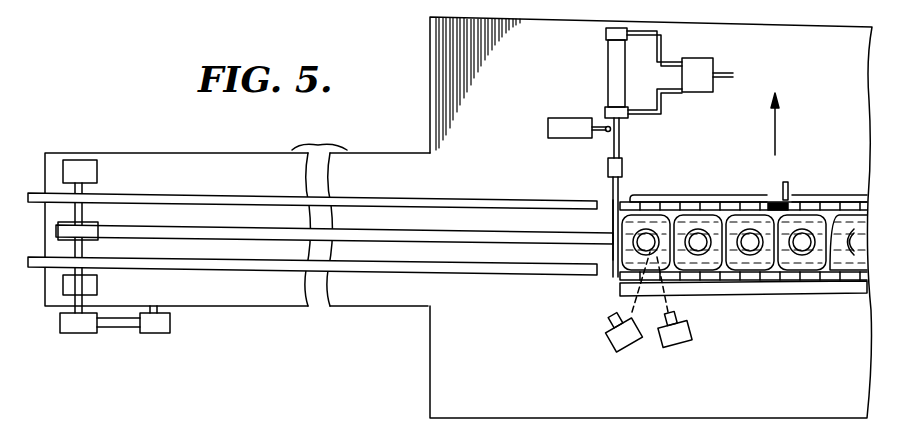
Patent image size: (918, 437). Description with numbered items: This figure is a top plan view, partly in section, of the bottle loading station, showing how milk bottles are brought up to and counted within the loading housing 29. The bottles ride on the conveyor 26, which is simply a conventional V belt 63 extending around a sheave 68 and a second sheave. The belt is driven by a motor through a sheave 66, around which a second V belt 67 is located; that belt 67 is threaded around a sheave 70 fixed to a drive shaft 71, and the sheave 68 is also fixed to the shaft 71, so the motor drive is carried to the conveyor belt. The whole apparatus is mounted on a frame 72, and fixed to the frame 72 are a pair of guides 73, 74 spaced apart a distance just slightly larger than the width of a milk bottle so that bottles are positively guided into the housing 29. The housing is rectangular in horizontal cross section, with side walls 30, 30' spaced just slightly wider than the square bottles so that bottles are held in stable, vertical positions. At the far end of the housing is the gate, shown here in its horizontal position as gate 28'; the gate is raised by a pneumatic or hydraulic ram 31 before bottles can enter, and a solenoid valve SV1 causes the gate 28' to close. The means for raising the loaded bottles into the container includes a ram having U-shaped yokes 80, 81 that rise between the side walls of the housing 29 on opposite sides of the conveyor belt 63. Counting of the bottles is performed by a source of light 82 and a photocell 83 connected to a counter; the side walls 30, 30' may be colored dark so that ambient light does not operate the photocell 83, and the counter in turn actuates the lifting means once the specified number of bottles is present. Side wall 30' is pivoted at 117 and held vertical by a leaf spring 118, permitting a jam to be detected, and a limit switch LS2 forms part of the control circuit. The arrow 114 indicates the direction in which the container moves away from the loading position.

The conveyor 26 is at (234, 319).
The gate 28' is at (743, 171).
The loading housing 29 is at (795, 283).
The side wall 30 is at (743, 312).
The side wall 30' is at (747, 183).
The ram 31 is at (607, 72).
The V belt 63 is at (205, 232).
The sheave 66 is at (163, 333).
The V belt 67 is at (125, 327).
The sheave 68 is at (92, 222).
The sheave 70 is at (80, 333).
The drive shaft 71 is at (73, 305).
The frame 72 is at (428, 343).
The guide 73 is at (392, 202).
The guide 74 is at (380, 273).
The U-shaped yoke 80 is at (612, 268).
The U-shaped yoke 81 is at (613, 217).
The source of light 82 is at (668, 347).
The photocell 83 is at (622, 349).
The arrow 114 is at (775, 132).
The pivot 117 is at (700, 203).
The leaf spring 118 is at (790, 186).
The solenoid valve SV1 is at (708, 57).
The limit switch LS2 is at (568, 118).